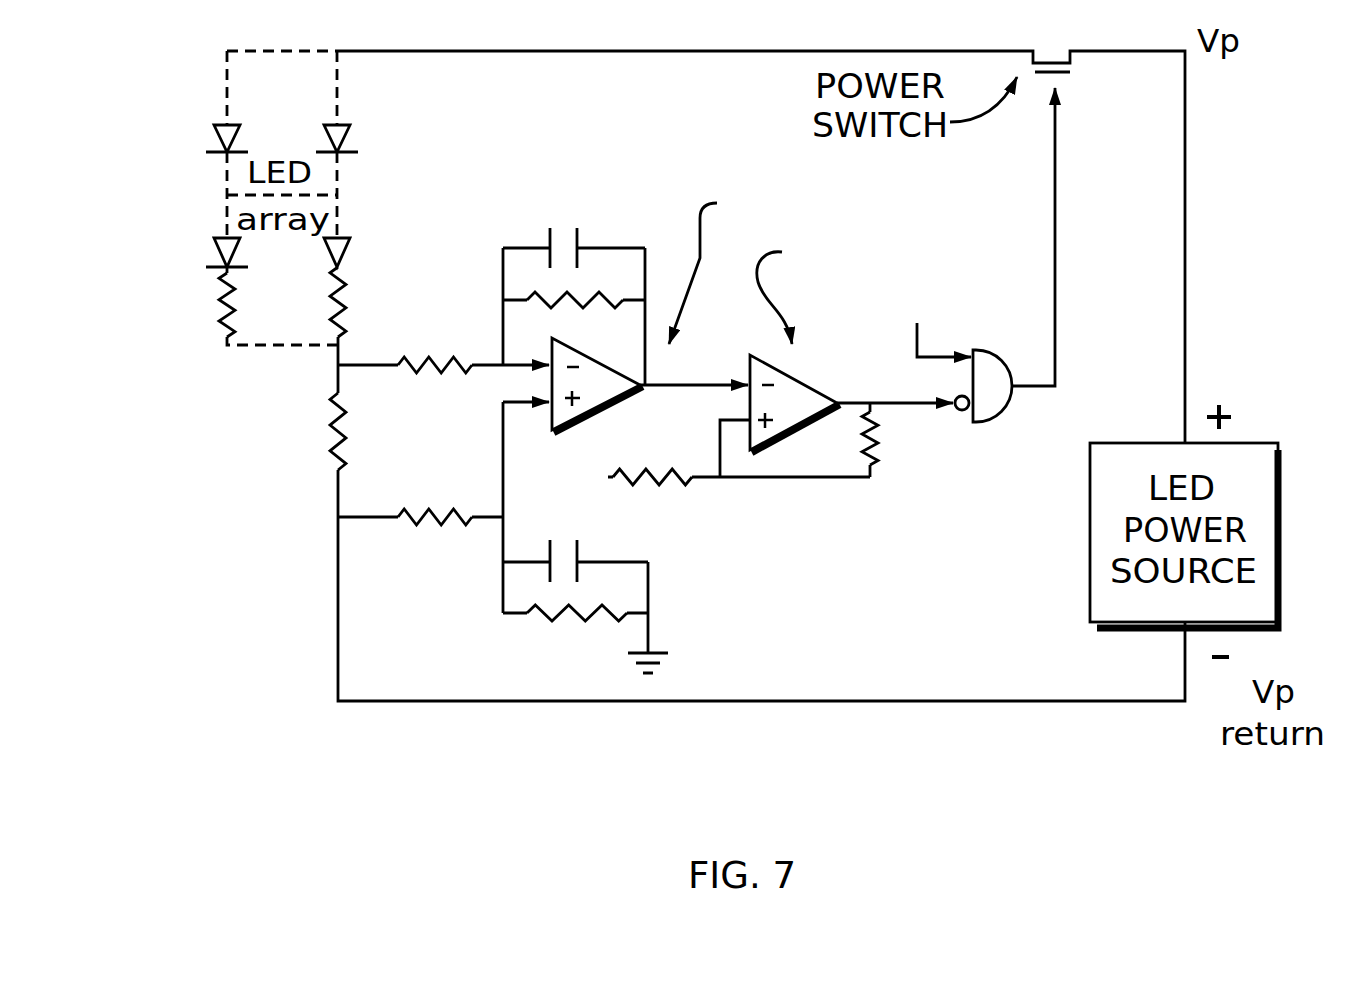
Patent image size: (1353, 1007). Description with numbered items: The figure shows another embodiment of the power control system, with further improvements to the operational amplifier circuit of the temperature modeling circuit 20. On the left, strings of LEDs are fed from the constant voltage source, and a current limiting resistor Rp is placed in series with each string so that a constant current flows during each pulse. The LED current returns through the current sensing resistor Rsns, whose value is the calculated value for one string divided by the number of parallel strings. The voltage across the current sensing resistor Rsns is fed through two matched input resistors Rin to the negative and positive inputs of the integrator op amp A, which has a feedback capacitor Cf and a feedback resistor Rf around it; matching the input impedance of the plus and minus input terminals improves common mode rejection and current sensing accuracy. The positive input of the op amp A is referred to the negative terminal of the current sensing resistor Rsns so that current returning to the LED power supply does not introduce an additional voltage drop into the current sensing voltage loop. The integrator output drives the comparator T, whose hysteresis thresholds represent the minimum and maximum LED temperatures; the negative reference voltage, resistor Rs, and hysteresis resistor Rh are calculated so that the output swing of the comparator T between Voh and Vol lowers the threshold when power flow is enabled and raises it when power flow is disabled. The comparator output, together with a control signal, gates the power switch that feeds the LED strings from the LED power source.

The temperature modeling circuit 20 is at (646, 216).
The current limiting resistor Rp is at (282, 302).
The current sensing resistor Rsns is at (287, 430).
The input resistor Rin is at (443, 420).
The feedback capacitor Cf is at (575, 385).
The feedback resistor Rf is at (575, 437).
The operational amplifier A is at (597, 385).
The comparator T is at (795, 404).
The threshold resistor Rs is at (739, 503).
The hysteresis resistor Rh is at (898, 440).